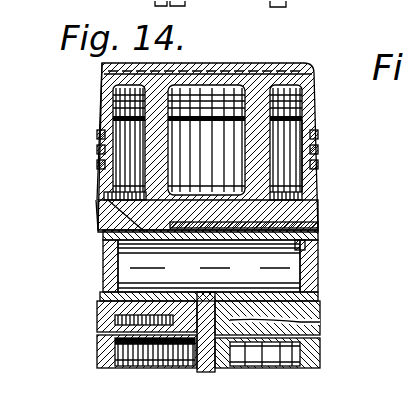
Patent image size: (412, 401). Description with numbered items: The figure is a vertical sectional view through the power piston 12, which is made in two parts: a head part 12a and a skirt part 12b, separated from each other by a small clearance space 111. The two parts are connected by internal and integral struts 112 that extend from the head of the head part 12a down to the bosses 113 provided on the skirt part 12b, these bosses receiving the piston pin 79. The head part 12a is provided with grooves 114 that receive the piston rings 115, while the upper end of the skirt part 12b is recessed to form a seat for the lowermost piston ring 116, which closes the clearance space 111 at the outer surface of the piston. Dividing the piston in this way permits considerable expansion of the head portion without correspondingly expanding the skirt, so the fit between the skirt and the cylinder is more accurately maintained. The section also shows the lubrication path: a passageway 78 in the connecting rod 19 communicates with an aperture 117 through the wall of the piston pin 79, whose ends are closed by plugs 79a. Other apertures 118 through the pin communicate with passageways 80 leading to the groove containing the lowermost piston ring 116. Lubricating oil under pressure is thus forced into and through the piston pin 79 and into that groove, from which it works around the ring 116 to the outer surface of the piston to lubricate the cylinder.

The piston 12 is at (188, 147).
The head part of the piston 12a is at (99, 122).
The skirt part of the piston 12b is at (96, 226).
The connecting rod 19 is at (196, 372).
The passageway 78 is at (214, 372).
The piston pin 79 is at (318, 233).
The plugs 79a is at (104, 274).
The passageways 80 is at (100, 216).
The clearance space 111 is at (285, 185).
The struts 112 is at (240, 130).
The bosses 113 is at (108, 300).
The grooves 114 is at (98, 151).
The piston rings 115 is at (98, 137).
The lowermost piston ring 116 is at (104, 195).
The aperture 117 is at (212, 285).
The apertures 118 is at (103, 255).